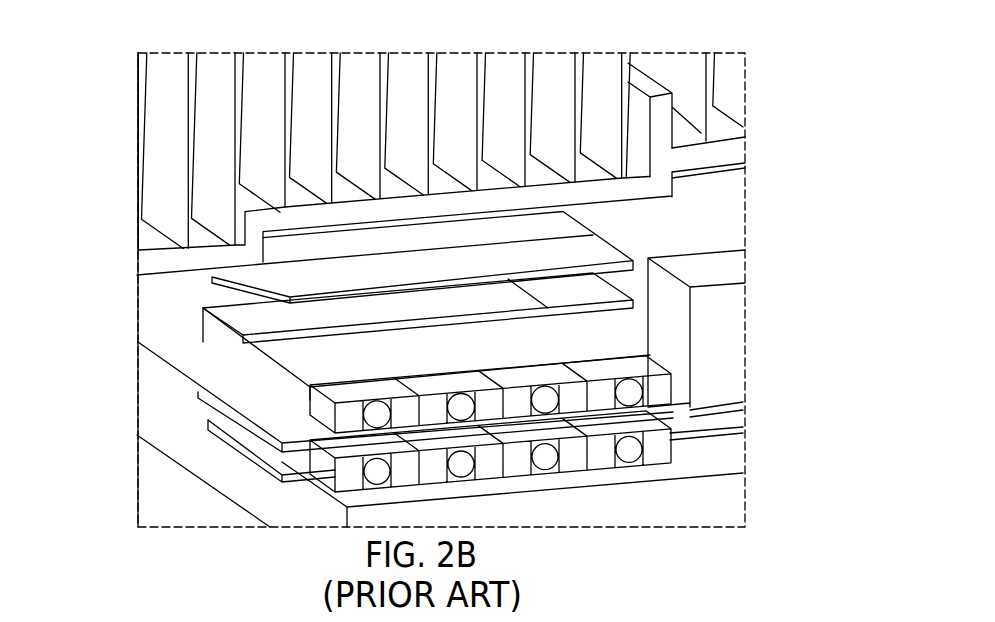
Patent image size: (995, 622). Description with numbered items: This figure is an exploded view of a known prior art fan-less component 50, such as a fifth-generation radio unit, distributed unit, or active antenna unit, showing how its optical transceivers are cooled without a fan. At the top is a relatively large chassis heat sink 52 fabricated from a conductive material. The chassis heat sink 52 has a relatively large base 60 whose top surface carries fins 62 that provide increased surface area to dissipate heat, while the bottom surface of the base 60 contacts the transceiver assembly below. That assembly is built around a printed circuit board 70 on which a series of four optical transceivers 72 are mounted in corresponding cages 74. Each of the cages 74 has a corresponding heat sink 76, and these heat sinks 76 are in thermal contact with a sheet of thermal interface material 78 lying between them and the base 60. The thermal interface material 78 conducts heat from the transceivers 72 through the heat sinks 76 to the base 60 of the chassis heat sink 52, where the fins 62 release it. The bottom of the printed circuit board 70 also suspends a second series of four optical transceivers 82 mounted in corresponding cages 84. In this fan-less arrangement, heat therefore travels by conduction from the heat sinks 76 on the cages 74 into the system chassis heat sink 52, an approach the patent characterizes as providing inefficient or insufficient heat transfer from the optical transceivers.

The fan-less component 50 is at (82, 126).
The chassis heat sink 52 is at (552, 98).
The base 60 is at (603, 187).
The fins 62 is at (465, 100).
The printed circuit board 70 is at (237, 418).
The optical transceivers 72 is at (323, 415).
The cages 74 is at (243, 362).
The heat sinks 76 is at (212, 283).
The thermal interface material 78 is at (600, 245).
The optical transceivers 82 is at (327, 482).
The cages 84 is at (293, 462).